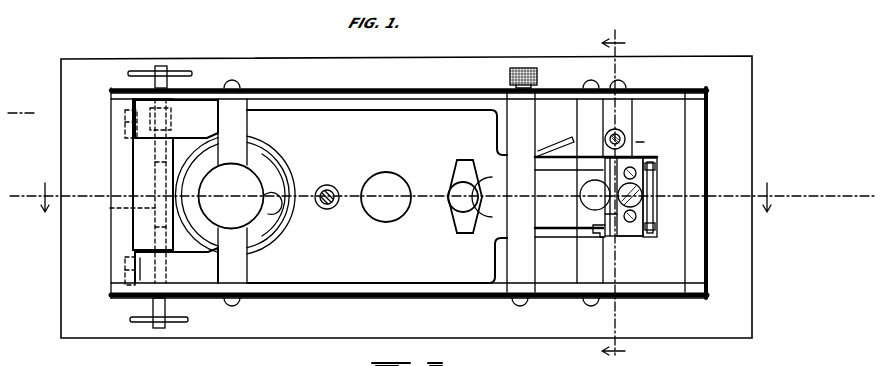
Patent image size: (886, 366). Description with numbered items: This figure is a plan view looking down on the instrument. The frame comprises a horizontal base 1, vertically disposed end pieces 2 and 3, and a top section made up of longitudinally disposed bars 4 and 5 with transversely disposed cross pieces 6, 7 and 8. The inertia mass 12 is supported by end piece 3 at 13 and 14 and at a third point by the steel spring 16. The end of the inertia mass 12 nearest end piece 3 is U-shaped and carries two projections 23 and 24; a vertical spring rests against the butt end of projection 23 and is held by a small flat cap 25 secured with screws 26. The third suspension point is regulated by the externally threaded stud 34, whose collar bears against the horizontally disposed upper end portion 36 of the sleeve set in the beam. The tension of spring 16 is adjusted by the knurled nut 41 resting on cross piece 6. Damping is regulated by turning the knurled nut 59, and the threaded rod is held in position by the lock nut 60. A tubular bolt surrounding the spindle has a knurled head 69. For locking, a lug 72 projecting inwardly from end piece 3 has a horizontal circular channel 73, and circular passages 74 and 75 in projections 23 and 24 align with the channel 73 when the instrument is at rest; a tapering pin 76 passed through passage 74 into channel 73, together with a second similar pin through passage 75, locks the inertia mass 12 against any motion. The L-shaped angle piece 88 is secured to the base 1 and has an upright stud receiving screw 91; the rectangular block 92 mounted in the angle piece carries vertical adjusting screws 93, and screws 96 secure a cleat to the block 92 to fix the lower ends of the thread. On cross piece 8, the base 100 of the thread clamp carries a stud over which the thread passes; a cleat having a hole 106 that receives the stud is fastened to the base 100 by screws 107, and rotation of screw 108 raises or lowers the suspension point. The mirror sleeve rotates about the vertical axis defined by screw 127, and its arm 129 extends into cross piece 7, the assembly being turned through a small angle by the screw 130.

The horizontal base 1 is at (92, 325).
The end piece 2 is at (700, 152).
The end piece 3 is at (113, 158).
The longitudinal bar 4 is at (330, 85).
The longitudinal bar 5 is at (319, 300).
The cross piece 6 is at (240, 267).
The cross piece 7 is at (515, 252).
The cross piece 8 is at (578, 259).
The inertia mass 12 is at (415, 118).
The support point 13 is at (130, 122).
The support point 14 is at (137, 271).
The steel spring 16 is at (270, 162).
The projection 23 is at (147, 278).
The projection 24 is at (147, 118).
The flat cap 25 is at (125, 112).
The screws 26 is at (125, 272).
The threaded stud 34 is at (328, 205).
The upper end portion of sleeve 36 is at (330, 187).
The knurled nut 41 is at (248, 212).
The knurled nut 59 is at (460, 189).
The lock nut 60 is at (455, 218).
The knurled head 69 is at (386, 174).
The lug 72 is at (135, 178).
The circular channel 73 is at (112, 209).
The circular passage 74 is at (168, 266).
The circular passage 75 is at (168, 128).
The tapering pin 76 is at (162, 68).
The L-shaped angle piece 88 is at (654, 240).
The screw 91 is at (640, 195).
The rectangular block 92 is at (636, 238).
The vertical adjusting screws 93 is at (633, 169).
The screws 96 is at (652, 165).
The base of thread clamp 100 is at (606, 169).
The hole 106 is at (612, 215).
The screws 107 is at (604, 235).
The screw 108 is at (594, 195).
The screw 127 is at (609, 136).
The arm 129 is at (553, 150).
The screw 130 is at (530, 67).